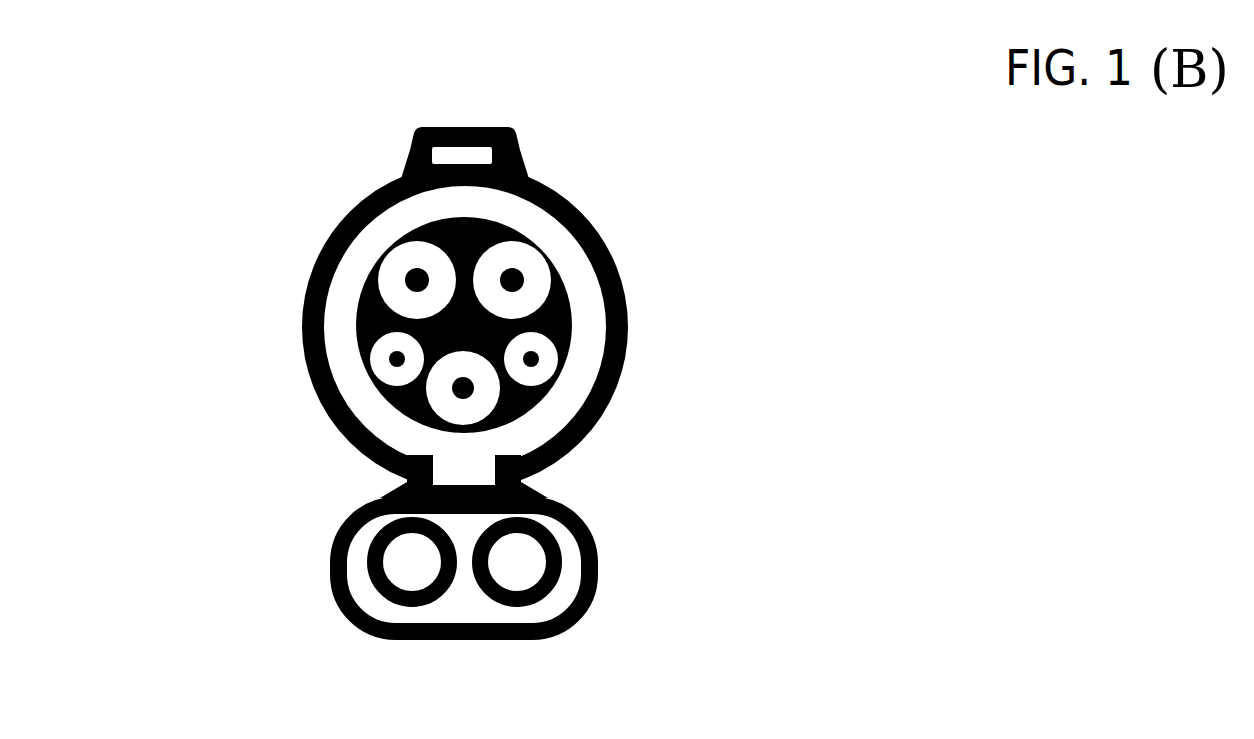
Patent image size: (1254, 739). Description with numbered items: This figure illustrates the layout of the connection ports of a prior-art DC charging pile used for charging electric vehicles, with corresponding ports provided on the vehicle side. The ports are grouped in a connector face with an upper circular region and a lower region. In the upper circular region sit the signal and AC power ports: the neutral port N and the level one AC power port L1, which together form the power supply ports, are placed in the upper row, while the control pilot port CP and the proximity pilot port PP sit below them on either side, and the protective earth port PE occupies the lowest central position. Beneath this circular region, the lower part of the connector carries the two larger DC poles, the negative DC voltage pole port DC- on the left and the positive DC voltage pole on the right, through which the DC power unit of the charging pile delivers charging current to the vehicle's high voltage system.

The neutral port N is at (416, 280).
The level 1 AC power port L1 is at (512, 280).
The control pilot port CP is at (396, 359).
The proximity pilot port PP is at (531, 359).
The protective earth port PE is at (463, 388).
The negative DC voltage pole port DC- is at (412, 605).